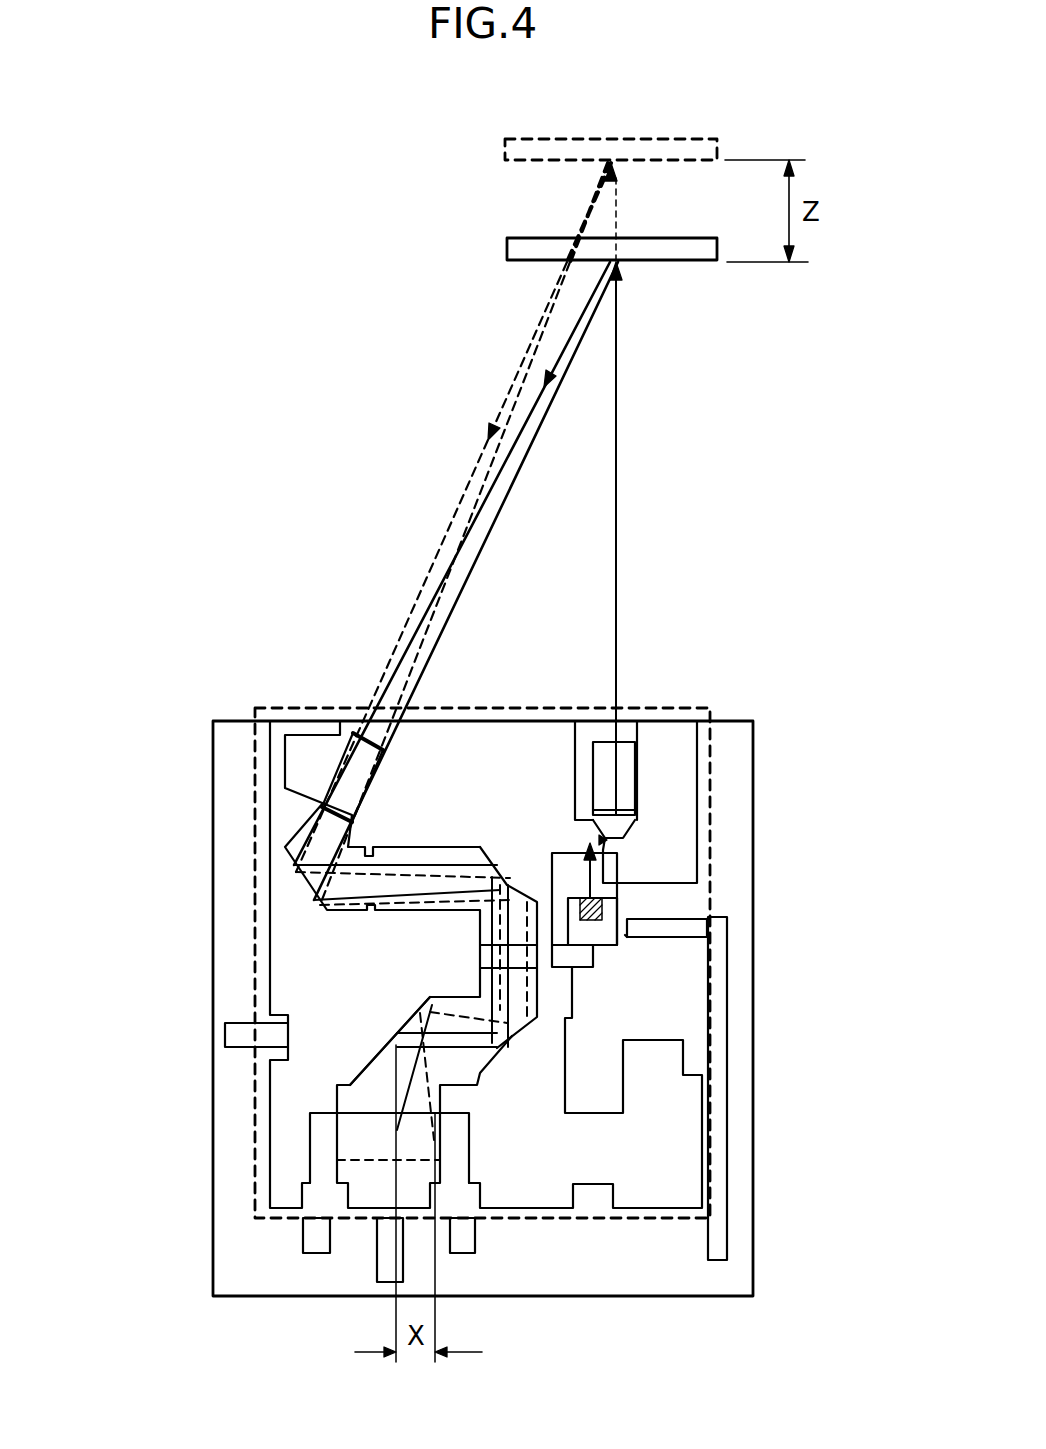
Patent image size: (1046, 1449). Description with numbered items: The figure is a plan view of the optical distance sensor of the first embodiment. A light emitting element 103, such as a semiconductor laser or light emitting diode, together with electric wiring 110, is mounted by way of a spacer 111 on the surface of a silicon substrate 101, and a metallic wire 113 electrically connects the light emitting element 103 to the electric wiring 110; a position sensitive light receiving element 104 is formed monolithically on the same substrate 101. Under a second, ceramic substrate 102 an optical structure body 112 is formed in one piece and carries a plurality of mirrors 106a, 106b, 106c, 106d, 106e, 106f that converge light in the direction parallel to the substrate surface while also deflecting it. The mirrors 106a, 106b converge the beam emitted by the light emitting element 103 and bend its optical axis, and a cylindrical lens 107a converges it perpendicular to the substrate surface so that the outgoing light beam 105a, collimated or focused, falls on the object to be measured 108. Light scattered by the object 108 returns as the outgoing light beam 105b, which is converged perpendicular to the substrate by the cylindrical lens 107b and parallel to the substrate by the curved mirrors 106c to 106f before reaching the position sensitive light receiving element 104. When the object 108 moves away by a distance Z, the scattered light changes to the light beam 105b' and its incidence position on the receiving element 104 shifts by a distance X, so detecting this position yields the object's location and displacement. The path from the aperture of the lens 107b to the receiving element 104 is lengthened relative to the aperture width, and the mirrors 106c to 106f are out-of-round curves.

The substrate 101 is at (737, 745).
The substrate 102 is at (305, 705).
The light emitting element 103 is at (610, 905).
The position sensitive light receiving element 104 is at (457, 1198).
The outgoing light beam 105a is at (618, 399).
The outgoing light beam 105b is at (456, 581).
The light beam 105b' is at (456, 651).
The mirror 106a is at (590, 840).
The mirror 106b is at (620, 835).
The mirror 106c is at (313, 905).
The mirror 106d is at (507, 885).
The mirror 106e is at (485, 1062).
The mirror 106f is at (363, 1063).
The cylindrical lens 107a is at (630, 753).
The cylindrical lens 107b is at (340, 787).
The object to be measured 108 is at (512, 238).
The electric wiring 110 is at (580, 958).
The spacer 111 is at (628, 932).
The optical structure body 112 is at (690, 745).
The metallic wire 113 is at (625, 935).